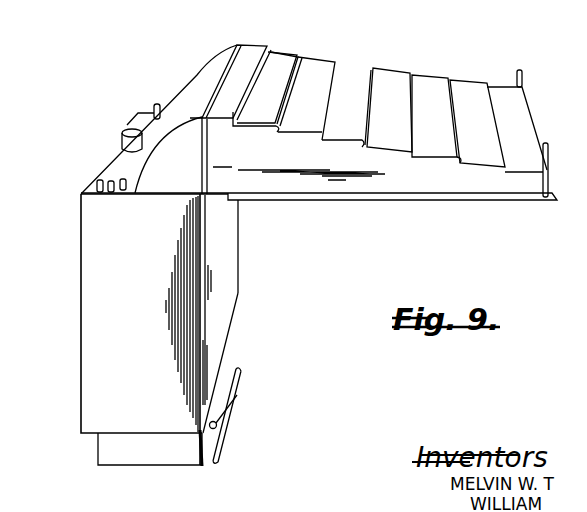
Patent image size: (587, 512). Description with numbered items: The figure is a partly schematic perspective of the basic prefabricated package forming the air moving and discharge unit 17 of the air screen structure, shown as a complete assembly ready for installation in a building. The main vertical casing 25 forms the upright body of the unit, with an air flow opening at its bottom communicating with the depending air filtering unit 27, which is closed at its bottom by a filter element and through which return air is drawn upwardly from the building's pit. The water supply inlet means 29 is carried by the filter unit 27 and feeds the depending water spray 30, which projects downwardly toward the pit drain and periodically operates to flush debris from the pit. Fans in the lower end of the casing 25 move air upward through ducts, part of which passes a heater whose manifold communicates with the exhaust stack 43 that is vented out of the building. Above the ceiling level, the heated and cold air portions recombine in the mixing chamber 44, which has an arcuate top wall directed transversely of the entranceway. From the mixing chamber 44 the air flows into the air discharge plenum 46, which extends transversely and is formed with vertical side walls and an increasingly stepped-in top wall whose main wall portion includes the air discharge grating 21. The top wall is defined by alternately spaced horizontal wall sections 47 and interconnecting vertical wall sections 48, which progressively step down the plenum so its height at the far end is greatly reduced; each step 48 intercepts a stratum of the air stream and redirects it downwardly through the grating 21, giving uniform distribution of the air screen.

The air moving unit 17 is at (92, 164).
The air discharge grating 21 is at (383, 200).
The main vertical casing 25 is at (80, 288).
The air filtering unit 27 is at (98, 452).
The water supply inlet means 29 is at (215, 430).
The water spray 30 is at (240, 390).
The exhaust stack 43 is at (122, 140).
The mixing chamber 44 is at (197, 75).
The air discharge plenum 46 is at (318, 181).
The horizontal wall sections 47 is at (281, 55).
The vertical wall sections 48 is at (278, 133).